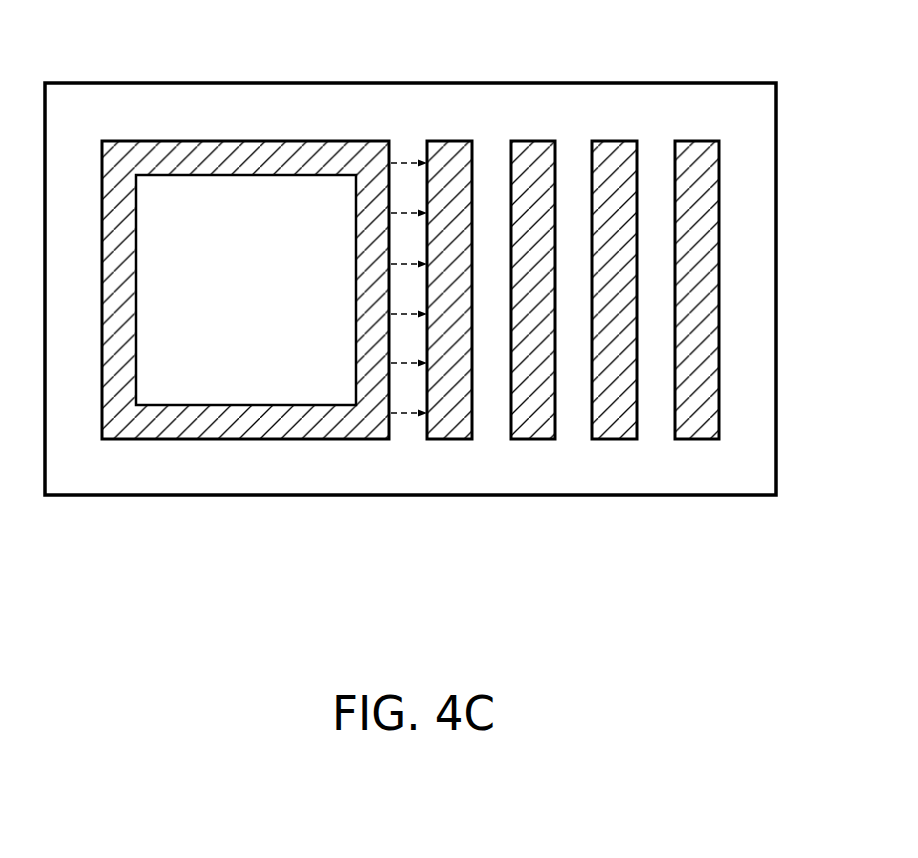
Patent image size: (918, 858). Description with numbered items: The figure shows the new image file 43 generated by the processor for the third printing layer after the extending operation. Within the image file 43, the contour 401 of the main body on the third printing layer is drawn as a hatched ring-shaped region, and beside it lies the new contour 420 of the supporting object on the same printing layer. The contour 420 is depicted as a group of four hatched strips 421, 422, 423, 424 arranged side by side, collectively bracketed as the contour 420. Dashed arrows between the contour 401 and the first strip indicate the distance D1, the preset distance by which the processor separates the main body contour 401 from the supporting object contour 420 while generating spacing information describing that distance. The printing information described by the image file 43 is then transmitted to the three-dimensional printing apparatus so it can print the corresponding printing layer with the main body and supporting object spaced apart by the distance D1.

The image file 43 is at (713, 83).
The contour 401 is at (253, 140).
The distance D1 is at (409, 308).
The new contour 420 is at (576, 378).
The first strip electrode 421 is at (445, 440).
The second strip electrode 422 is at (528, 440).
The third strip electrode 423 is at (610, 440).
The fourth strip electrode 424 is at (700, 353).